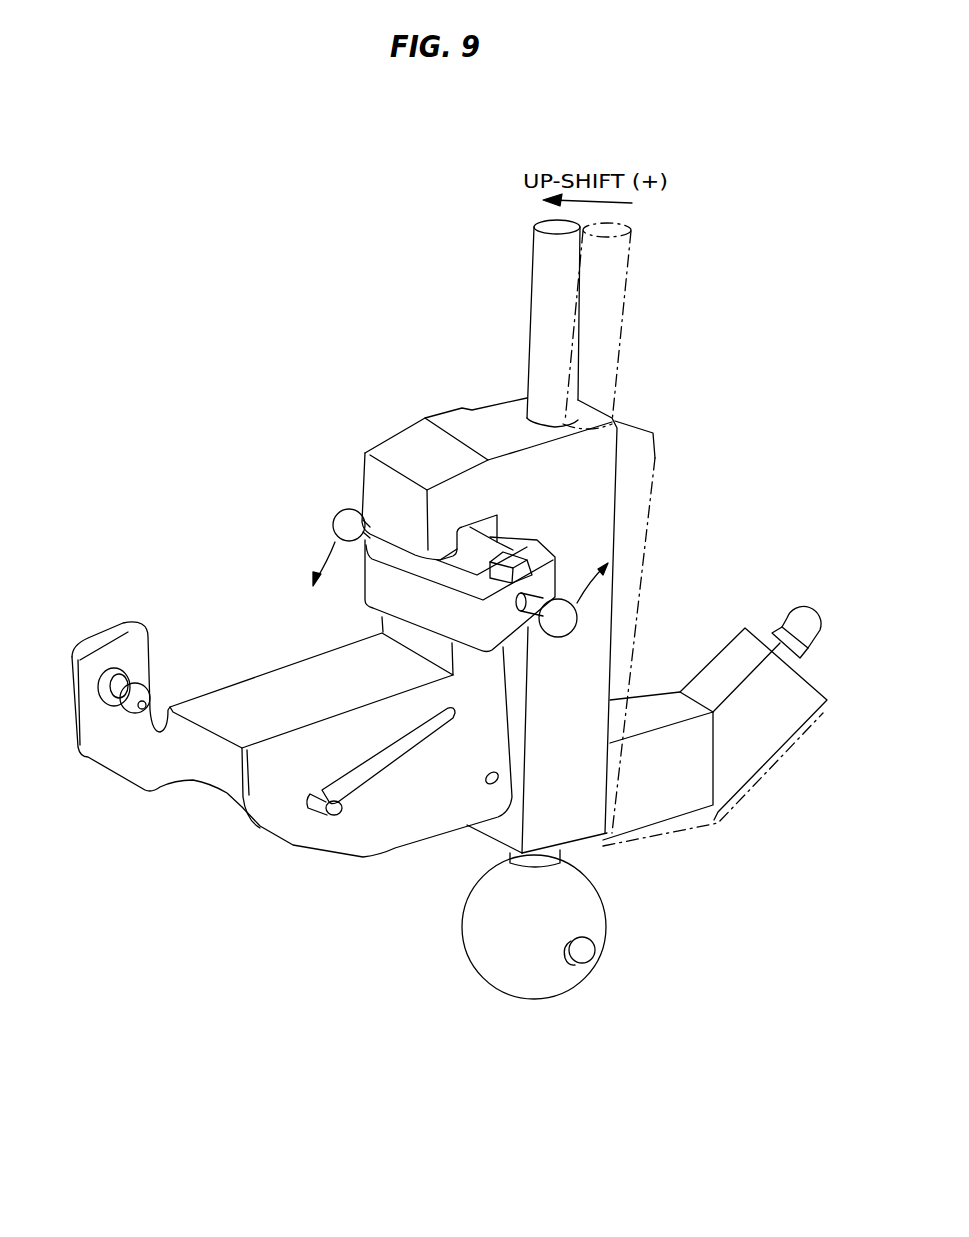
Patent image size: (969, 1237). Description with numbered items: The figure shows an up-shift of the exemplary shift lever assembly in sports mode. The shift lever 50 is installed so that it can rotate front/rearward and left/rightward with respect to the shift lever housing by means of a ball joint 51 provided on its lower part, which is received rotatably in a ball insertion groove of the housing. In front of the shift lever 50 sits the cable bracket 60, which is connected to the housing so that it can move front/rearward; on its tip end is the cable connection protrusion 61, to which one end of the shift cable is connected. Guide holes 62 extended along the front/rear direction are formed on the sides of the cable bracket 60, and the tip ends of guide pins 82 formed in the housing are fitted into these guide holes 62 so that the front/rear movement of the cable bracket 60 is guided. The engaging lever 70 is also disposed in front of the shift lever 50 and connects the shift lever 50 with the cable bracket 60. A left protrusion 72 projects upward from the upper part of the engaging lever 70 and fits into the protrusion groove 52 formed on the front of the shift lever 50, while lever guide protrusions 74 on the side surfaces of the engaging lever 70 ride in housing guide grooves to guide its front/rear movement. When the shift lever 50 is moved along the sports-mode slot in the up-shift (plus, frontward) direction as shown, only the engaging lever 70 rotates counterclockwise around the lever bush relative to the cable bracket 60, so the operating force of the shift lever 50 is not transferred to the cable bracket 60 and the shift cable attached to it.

The shift lever 50 is at (408, 440).
The ball joint 51 is at (488, 953).
The protrusion groove 52 is at (370, 527).
The cable bracket 60 is at (250, 690).
The cable connection protrusion 61 is at (123, 710).
The guide hole 62 is at (377, 760).
The engaging lever 70 is at (373, 593).
The left protrusion 72 is at (513, 557).
The lever guide protrusion 74 is at (345, 523).
The guide pin 82 is at (333, 812).